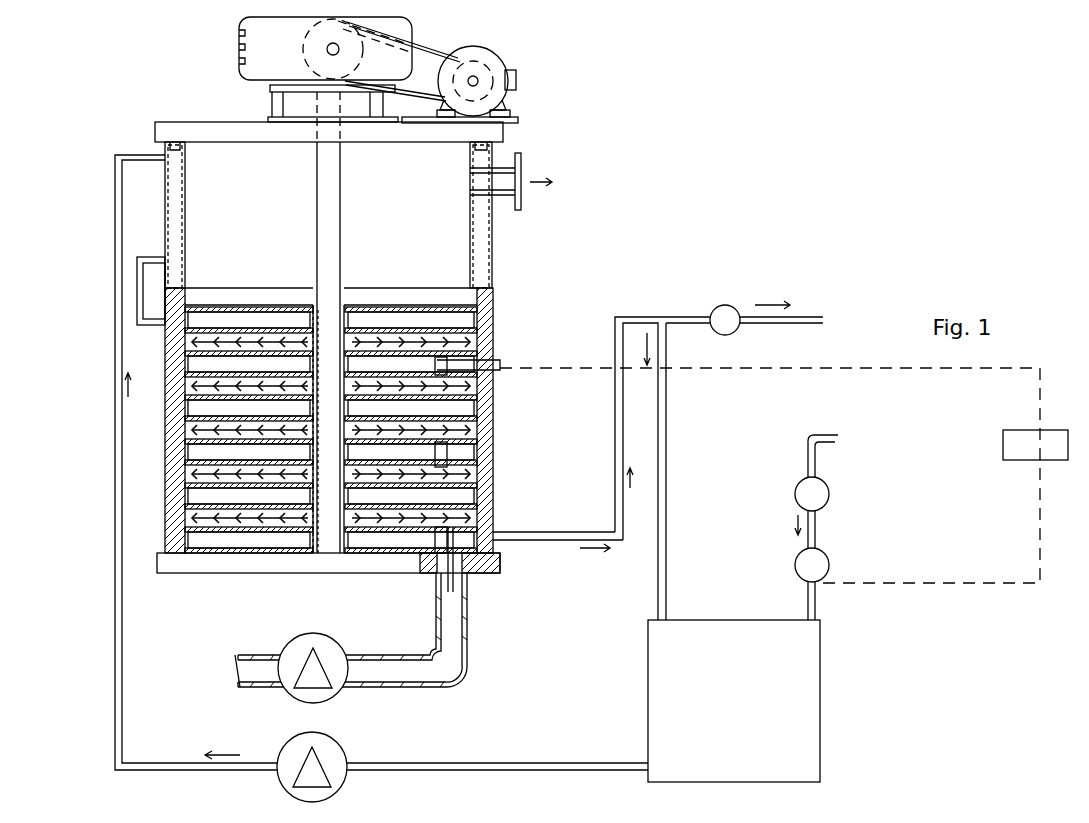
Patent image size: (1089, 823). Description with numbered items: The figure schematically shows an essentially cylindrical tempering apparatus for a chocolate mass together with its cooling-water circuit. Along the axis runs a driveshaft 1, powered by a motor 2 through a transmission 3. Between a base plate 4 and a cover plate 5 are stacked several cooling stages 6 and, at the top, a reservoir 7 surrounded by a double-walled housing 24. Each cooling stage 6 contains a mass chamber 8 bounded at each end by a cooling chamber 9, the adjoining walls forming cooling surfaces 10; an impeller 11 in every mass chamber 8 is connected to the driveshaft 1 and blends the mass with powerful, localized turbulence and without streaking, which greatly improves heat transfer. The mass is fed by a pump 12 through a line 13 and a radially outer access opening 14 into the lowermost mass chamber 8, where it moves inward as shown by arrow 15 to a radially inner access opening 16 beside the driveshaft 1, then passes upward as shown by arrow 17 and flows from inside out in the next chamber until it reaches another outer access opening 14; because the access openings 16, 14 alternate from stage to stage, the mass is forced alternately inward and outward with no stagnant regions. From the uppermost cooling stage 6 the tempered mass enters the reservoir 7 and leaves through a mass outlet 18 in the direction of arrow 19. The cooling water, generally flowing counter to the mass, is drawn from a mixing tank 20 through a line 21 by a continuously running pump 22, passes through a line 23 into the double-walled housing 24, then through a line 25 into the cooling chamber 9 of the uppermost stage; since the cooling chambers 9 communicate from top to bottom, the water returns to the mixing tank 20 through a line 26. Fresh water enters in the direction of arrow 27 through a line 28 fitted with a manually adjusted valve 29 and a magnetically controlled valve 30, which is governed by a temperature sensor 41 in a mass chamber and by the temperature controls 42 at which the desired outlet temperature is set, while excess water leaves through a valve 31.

The driveshaft 1 is at (330, 235).
The motor 2 is at (490, 80).
The transmission 3 is at (310, 53).
The base plate 4 is at (215, 560).
The cover plate 5 is at (195, 132).
The cooling stage 6 is at (157, 477).
The reservoir 7 is at (220, 168).
The mass chamber 8 is at (185, 519).
The cooling chamber 9 is at (200, 367).
The cooling surface 10 is at (425, 482).
The impeller 11 is at (272, 478).
The pump 12 is at (318, 680).
The line 13 is at (467, 655).
The access opening 14 is at (493, 363).
The arrow 15 is at (452, 590).
The access opening 16 is at (352, 410).
The arrow 17 is at (303, 521).
The mass outlet 18 is at (522, 160).
The arrow 19 is at (525, 183).
The mixing tank 20 is at (760, 720).
The line 21 is at (520, 768).
The pump 22 is at (318, 790).
The line 23 is at (118, 652).
The double-walled housing 24 is at (168, 240).
The line 25 is at (145, 283).
The line 26 is at (617, 322).
The arrow 27 is at (795, 522).
The line 28 is at (815, 460).
The manually adjusted valve 29 is at (815, 494).
The magnetically controlled valve 30 is at (815, 565).
The valve 31 is at (723, 318).
The temperature sensor 41 is at (493, 365).
The temperature controls 42 is at (1045, 458).